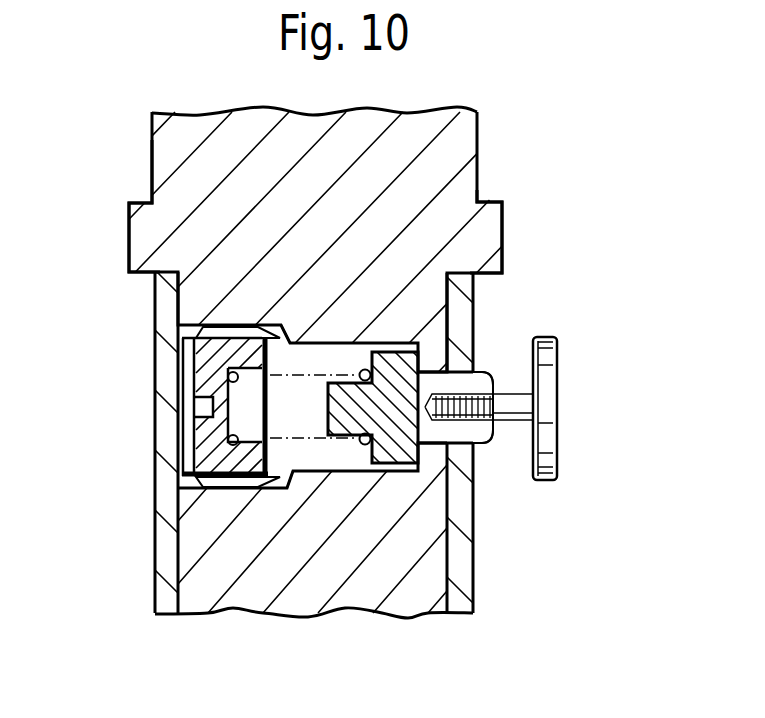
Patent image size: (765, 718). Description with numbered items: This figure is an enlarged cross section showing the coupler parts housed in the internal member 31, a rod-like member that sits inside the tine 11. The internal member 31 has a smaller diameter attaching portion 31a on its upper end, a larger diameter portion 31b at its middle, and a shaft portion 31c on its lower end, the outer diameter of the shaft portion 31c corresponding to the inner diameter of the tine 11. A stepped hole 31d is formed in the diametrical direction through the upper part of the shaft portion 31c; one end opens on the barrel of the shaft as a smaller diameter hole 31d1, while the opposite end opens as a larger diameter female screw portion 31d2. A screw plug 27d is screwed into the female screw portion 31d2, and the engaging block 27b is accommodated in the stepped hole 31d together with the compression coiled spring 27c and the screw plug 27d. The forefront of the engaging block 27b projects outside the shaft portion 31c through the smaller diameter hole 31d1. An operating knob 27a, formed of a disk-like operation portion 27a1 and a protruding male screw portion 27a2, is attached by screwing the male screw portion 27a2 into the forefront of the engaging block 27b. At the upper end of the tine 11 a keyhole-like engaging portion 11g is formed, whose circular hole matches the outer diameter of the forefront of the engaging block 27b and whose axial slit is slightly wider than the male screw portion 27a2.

The internal member 31 is at (480, 143).
The attaching portion 31a is at (172, 150).
The larger diameter portion 31b is at (487, 235).
The shaft portion 31c is at (430, 587).
The stepped hole 31d is at (320, 358).
The smaller diameter hole 31d1 is at (462, 345).
The larger diameter female screw portion 31d2 is at (185, 356).
The tine 11 is at (165, 545).
The engaging portion 11g is at (460, 290).
The operating knob 27a is at (558, 377).
The operation portion 27a1 is at (543, 458).
The male screw portion 27a2 is at (507, 413).
The engaging block 27b is at (392, 447).
The compression coiled spring 27c is at (305, 438).
The screw plug 27d is at (233, 465).